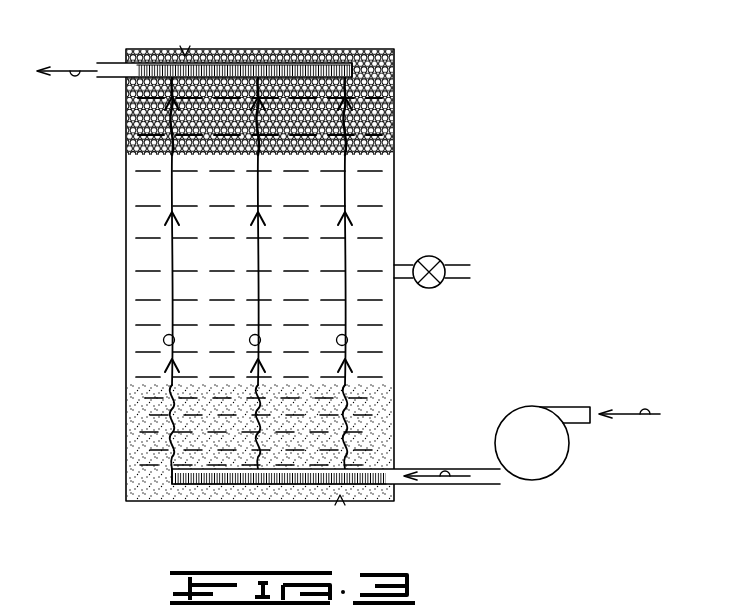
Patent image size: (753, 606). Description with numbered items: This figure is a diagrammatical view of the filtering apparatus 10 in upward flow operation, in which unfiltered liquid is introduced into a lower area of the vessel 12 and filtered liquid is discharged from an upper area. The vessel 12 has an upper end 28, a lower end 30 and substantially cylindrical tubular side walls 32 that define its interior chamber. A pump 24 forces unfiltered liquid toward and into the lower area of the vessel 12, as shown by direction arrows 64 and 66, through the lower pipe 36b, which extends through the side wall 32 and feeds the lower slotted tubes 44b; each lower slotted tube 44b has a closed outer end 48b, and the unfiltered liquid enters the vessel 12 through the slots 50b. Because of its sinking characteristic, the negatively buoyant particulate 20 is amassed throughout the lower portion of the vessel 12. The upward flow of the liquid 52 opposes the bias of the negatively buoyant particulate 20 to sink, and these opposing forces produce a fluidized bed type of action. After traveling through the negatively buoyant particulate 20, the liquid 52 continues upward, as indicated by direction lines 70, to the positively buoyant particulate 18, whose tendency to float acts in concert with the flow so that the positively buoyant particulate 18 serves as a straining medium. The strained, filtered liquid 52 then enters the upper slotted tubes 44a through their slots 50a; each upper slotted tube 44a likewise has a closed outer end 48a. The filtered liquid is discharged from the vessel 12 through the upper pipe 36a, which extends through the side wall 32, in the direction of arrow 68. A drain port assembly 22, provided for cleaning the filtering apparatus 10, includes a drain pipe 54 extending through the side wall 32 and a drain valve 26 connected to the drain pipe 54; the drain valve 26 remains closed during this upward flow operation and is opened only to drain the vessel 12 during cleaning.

The filtering apparatus 10 is at (505, 92).
The vessel 12 is at (396, 70).
The positively buoyant particulate 18 is at (378, 118).
The negatively buoyant particulate 20 is at (388, 432).
The drain port assembly 22 is at (403, 260).
The pump 24 is at (548, 458).
The drain valve 26 is at (438, 284).
The upper end 28 is at (290, 50).
The lower end 30 is at (232, 501).
The side walls 32 is at (126, 272).
The upper pipe 36a is at (118, 62).
The lower pipe 36b is at (405, 486).
The upper slotted tubes 44a is at (185, 52).
The lower slotted tubes 44b is at (340, 497).
The outer end 48a is at (365, 62).
The outer end 48b is at (172, 480).
The slots 50a is at (232, 55).
The slots 50b is at (292, 488).
The liquid 52 is at (150, 228).
The drain pipe 54 is at (393, 266).
The direction arrow 64 is at (645, 410).
The direction arrow 66 is at (445, 480).
The direction arrow 68 is at (80, 70).
The direction lines 70 is at (170, 340).